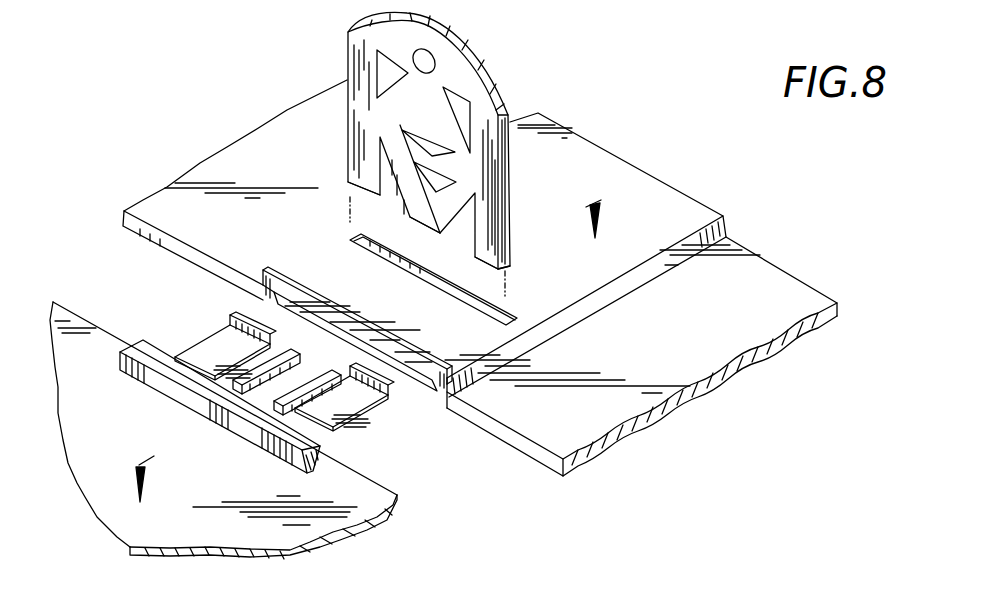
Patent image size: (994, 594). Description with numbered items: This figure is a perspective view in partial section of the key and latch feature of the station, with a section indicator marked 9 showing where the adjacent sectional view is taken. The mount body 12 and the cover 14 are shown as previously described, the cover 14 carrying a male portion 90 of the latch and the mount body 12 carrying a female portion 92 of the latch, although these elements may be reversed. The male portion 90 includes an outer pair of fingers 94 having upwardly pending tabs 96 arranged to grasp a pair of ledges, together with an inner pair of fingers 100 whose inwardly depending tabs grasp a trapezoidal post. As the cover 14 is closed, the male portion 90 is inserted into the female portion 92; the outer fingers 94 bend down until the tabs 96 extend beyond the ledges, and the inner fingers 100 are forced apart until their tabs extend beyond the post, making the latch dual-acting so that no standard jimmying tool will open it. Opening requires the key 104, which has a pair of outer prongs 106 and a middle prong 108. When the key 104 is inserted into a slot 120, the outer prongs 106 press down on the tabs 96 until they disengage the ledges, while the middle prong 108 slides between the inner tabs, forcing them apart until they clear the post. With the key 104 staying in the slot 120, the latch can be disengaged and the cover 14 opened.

The mount body 12 is at (750, 278).
The cover 14 is at (97, 497).
The male portion 90 is at (405, 480).
The female portion 92 is at (408, 395).
The outer pair of fingers 94 is at (177, 348).
The tabs 96 is at (240, 323).
The inner pair of fingers 100 is at (330, 370).
The key 104 is at (461, 77).
The outer prongs 106 is at (363, 172).
The middle prong 108 is at (418, 210).
The slot 120 is at (475, 300).
The section line 9 is at (368, 365).